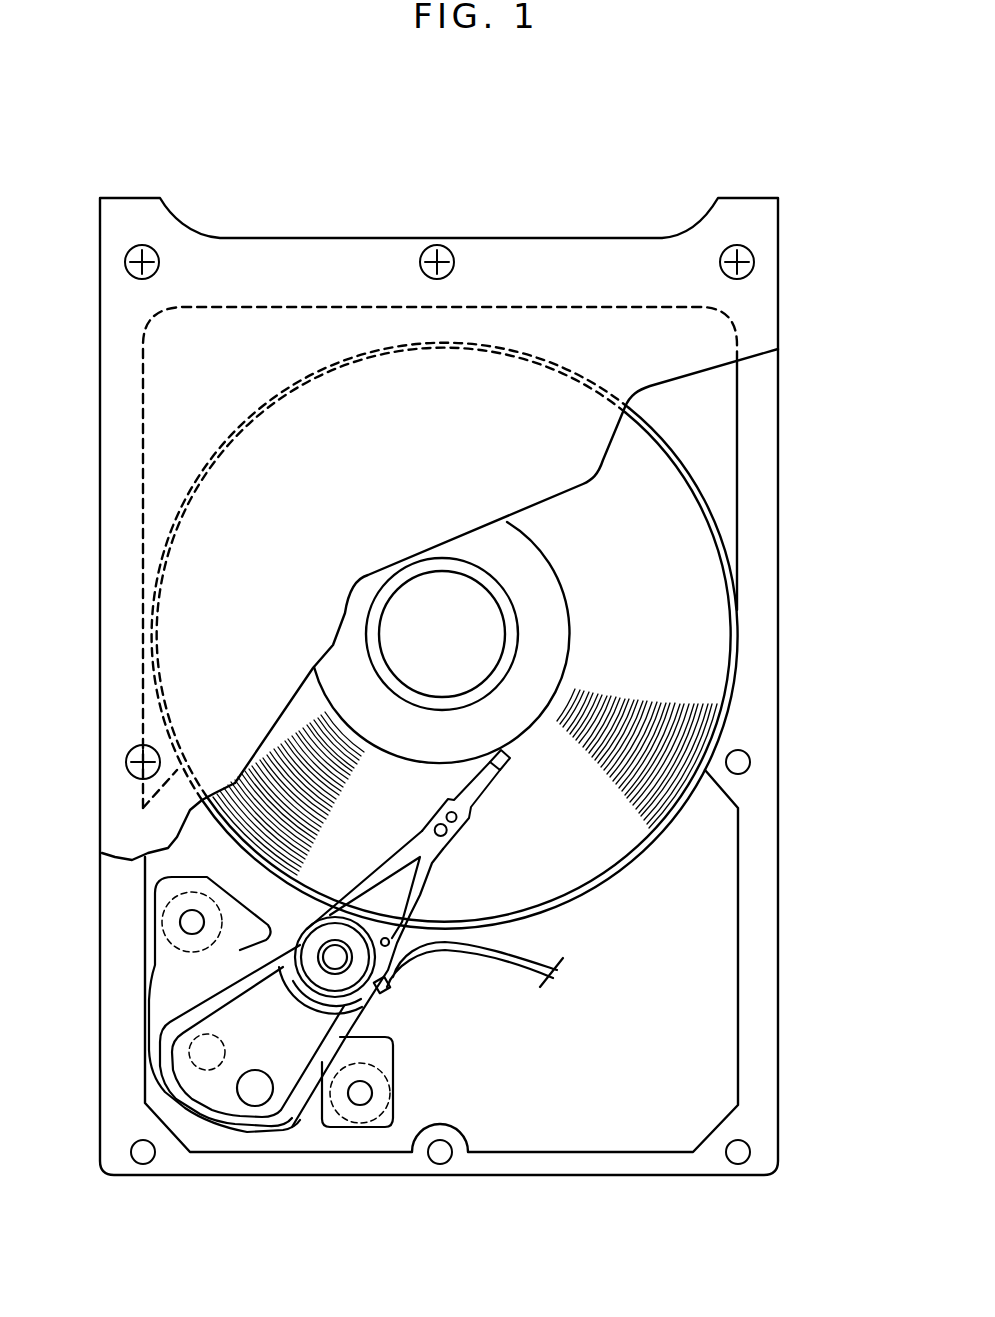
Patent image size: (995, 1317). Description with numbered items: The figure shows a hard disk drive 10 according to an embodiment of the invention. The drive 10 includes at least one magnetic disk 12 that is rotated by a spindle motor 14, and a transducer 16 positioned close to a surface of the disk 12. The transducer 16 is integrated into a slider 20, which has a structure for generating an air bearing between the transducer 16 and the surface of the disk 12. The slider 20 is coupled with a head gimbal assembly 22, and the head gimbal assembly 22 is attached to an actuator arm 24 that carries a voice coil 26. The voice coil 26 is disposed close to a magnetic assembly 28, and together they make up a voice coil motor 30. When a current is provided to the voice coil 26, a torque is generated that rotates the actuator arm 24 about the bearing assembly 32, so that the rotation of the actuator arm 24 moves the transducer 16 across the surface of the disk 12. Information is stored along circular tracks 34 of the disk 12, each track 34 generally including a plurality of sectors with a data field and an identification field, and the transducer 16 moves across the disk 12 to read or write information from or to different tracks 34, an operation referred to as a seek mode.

The drive 10 is at (581, 156).
The magnetic disk 12 is at (696, 566).
The spindle motor 14 is at (418, 612).
The transducer 16 is at (506, 762).
The slider 20 is at (490, 778).
The head gimbal assembly 22 is at (446, 872).
The actuator arm 24 is at (250, 975).
The voice coil 26 is at (190, 1040).
The magnetic assembly 28 is at (190, 985).
The voice coil motor 30 is at (307, 1108).
The bearing assembly 32 is at (347, 967).
The circular tracks 34 is at (298, 753).